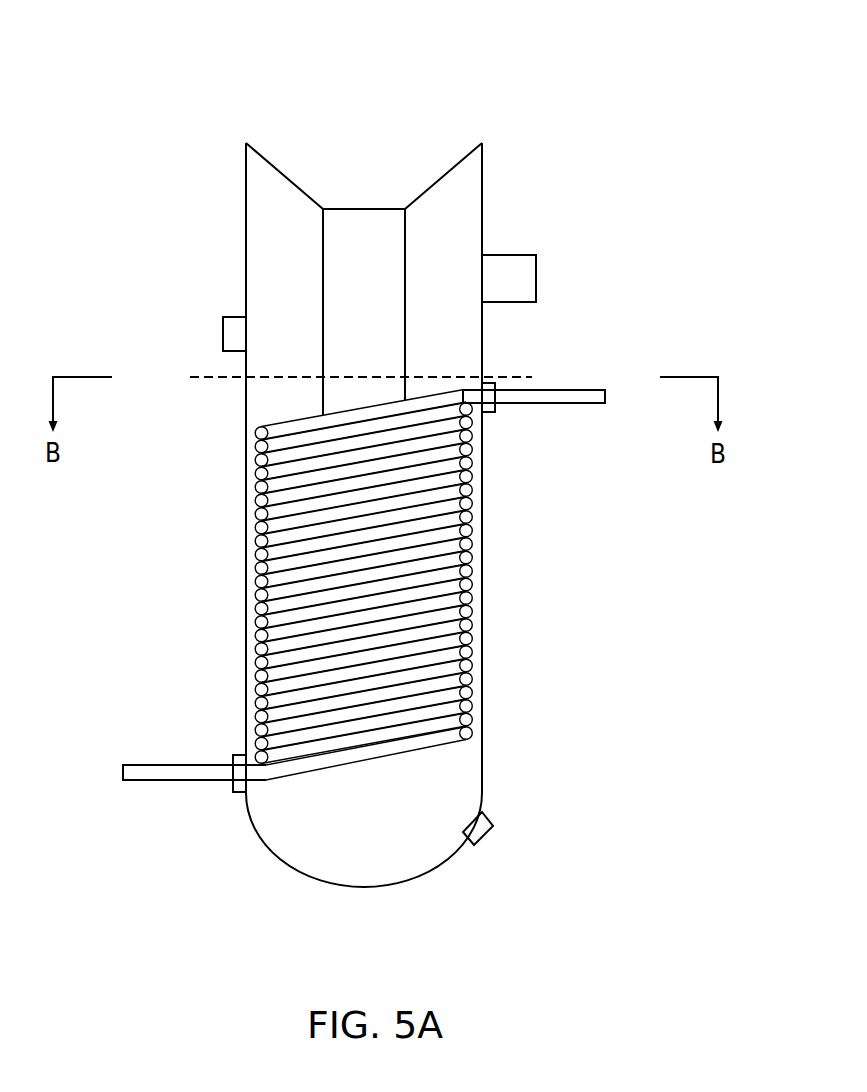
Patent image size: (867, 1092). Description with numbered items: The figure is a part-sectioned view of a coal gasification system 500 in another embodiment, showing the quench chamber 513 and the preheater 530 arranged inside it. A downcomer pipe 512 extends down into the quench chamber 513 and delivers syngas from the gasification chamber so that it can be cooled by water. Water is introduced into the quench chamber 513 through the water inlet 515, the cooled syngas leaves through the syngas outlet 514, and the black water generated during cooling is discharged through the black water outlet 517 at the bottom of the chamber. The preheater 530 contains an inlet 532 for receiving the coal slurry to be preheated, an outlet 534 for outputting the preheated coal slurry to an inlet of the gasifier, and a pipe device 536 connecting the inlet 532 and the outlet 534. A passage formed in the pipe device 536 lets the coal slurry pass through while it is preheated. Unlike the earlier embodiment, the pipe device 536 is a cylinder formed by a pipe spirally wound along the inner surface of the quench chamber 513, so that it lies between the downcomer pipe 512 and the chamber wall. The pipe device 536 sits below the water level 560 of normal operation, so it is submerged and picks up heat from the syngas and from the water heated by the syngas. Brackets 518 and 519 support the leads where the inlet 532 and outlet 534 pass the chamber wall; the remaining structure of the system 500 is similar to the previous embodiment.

The coal gasification system 500 is at (199, 70).
The downcomer pipe 512 is at (347, 252).
The quench chamber 513 is at (262, 190).
The syngas outlet 514 is at (521, 247).
The water inlet 515 is at (201, 337).
The black water outlet 517 is at (490, 855).
The lower lead bracket 518 is at (232, 747).
The upper lead bracket 519 is at (497, 434).
The preheater 530 is at (262, 460).
The inlet 532 is at (107, 774).
The outlet 534 is at (616, 397).
The pipe device 536 is at (278, 637).
The water level 560 is at (517, 375).